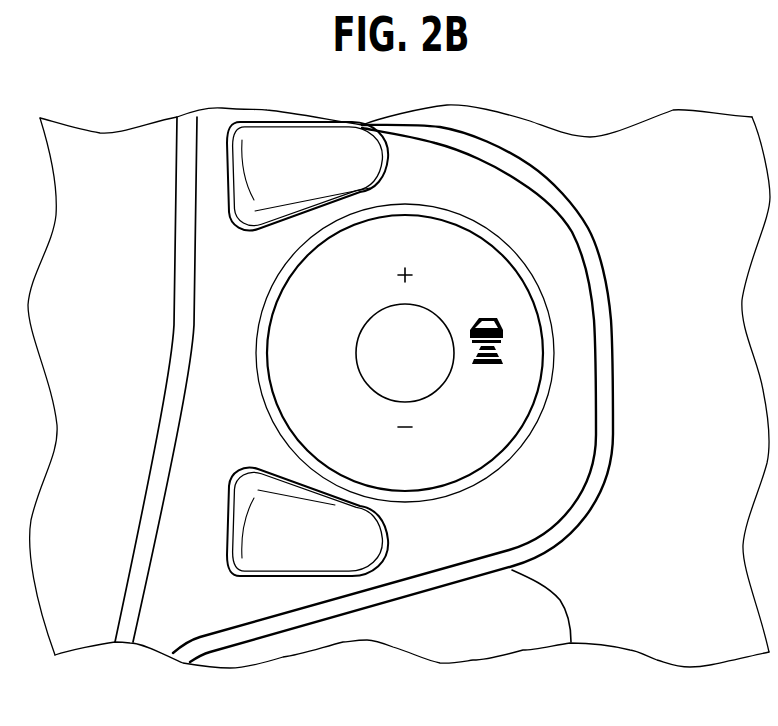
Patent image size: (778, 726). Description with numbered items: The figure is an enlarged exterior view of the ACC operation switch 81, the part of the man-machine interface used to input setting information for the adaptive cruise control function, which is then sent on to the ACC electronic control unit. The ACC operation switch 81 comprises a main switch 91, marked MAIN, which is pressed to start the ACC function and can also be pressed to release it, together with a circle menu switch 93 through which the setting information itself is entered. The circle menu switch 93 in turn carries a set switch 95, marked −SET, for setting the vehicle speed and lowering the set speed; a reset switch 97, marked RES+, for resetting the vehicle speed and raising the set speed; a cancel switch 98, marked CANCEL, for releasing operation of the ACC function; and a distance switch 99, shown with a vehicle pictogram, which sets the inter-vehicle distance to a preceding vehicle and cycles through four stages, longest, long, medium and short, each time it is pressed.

The ACC operation switch 81 is at (487, 200).
The main switch 91 is at (265, 145).
The circle menu switch 93 is at (526, 283).
The set switch 95 is at (407, 470).
The reset switch 97 is at (417, 227).
The cancel switch 98 is at (407, 375).
The distance switch 99 is at (508, 338).